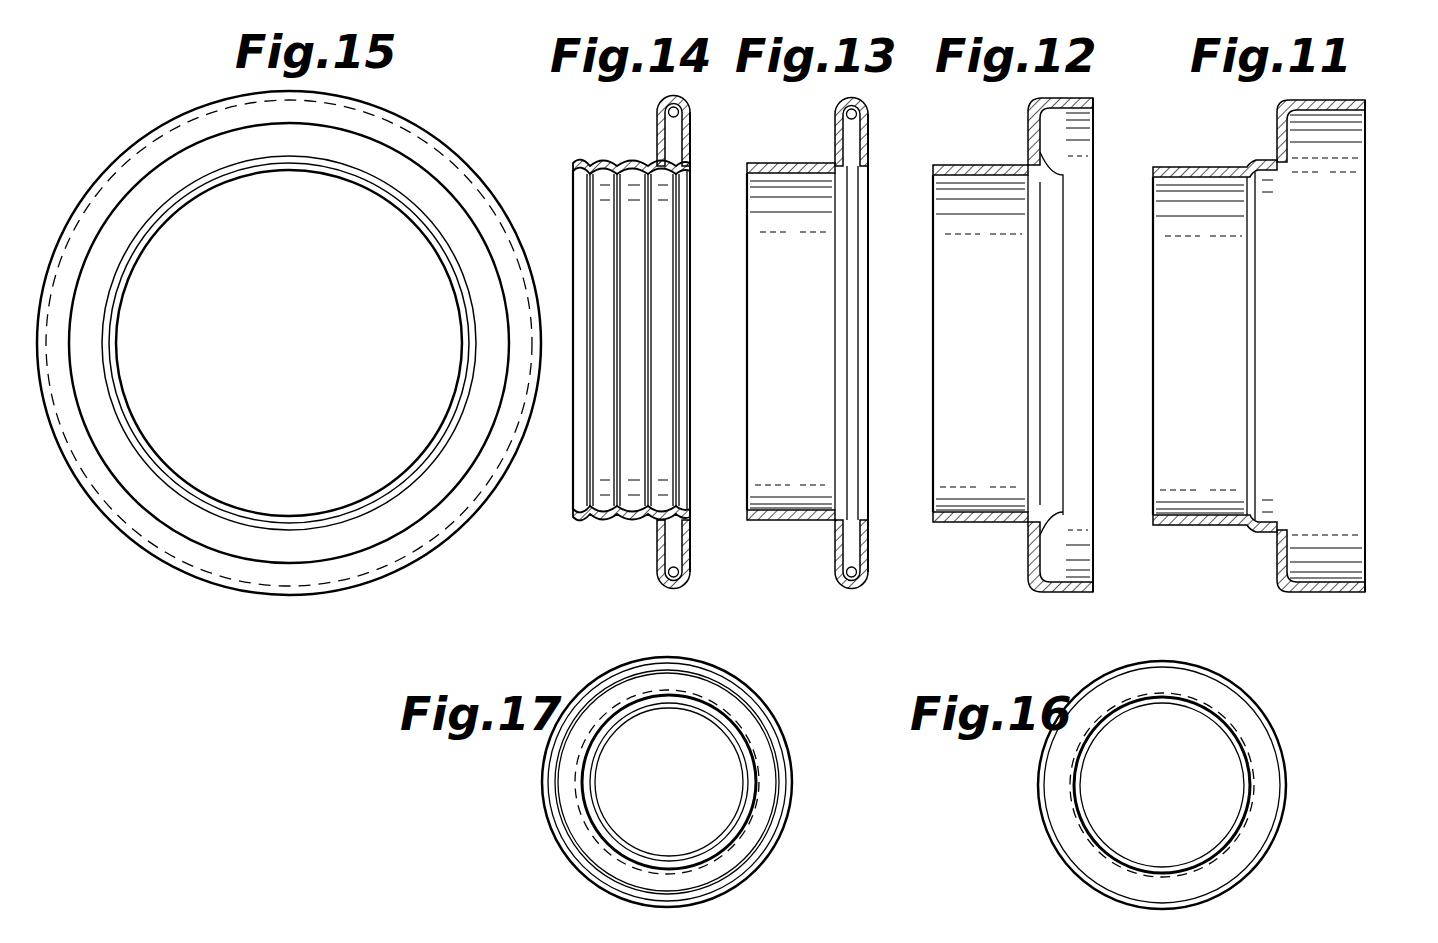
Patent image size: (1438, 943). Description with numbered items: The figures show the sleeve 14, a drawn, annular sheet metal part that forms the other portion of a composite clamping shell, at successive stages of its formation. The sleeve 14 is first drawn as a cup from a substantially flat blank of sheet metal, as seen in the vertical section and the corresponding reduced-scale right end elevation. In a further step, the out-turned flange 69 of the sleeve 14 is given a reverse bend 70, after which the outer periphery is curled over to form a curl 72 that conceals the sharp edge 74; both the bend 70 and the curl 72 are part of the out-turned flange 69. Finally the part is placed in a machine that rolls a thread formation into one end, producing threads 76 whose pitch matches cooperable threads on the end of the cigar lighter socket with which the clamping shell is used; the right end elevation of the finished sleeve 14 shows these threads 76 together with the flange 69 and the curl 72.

In FIG. 15, the sleeve 14 is at (208, 589).
In FIG. 14, the sleeve 14 is at (608, 545).
In FIG. 13, the sleeve 14 is at (787, 544).
In FIG. 12, the sleeve 14 is at (974, 554).
In FIG. 11, the sleeve 14 is at (1232, 549).
In FIG. 17, the sleeve 14 is at (786, 705).
In FIG. 16, the sleeve 14 is at (1284, 707).
In FIG. 15, the out-turned flange 69 is at (385, 525).
In FIG. 14, the out-turned flange 69 is at (688, 152).
In FIG. 13, the out-turned flange 69 is at (869, 152).
In FIG. 12, the out-turned flange 69 is at (1064, 150).
In FIG. 11, the out-turned flange 69 is at (1276, 150).
In FIG. 17, the out-turned flange 69 is at (766, 800).
In FIG. 16, the out-turned flange 69 is at (1210, 697).
In FIG. 13, the reverse bend 70 is at (791, 341).
In FIG. 12, the reverse bend 70 is at (1016, 137).
In FIG. 11, the reverse bend 70 is at (1215, 346).
In FIG. 17, the reverse bend 70 is at (716, 696).
In FIG. 15, the curl 72 is at (450, 160).
In FIG. 14, the curl 72 is at (686, 104).
In FIG. 13, the curl 72 is at (863, 104).
In FIG. 15, the sharp edge 74 is at (482, 222).
In FIG. 14, the sharp edge 74 is at (691, 127).
In FIG. 13, the sharp edge 74 is at (869, 127).
In FIG. 12, the sharp edge 74 is at (1094, 104).
In FIG. 11, the sharp edge 74 is at (1366, 106).
In FIG. 17, the sharp edge 74 is at (791, 766).
In FIG. 16, the sharp edge 74 is at (1284, 780).
In FIG. 15, the threads 76 is at (458, 298).
In FIG. 14, the threads 76 is at (618, 160).